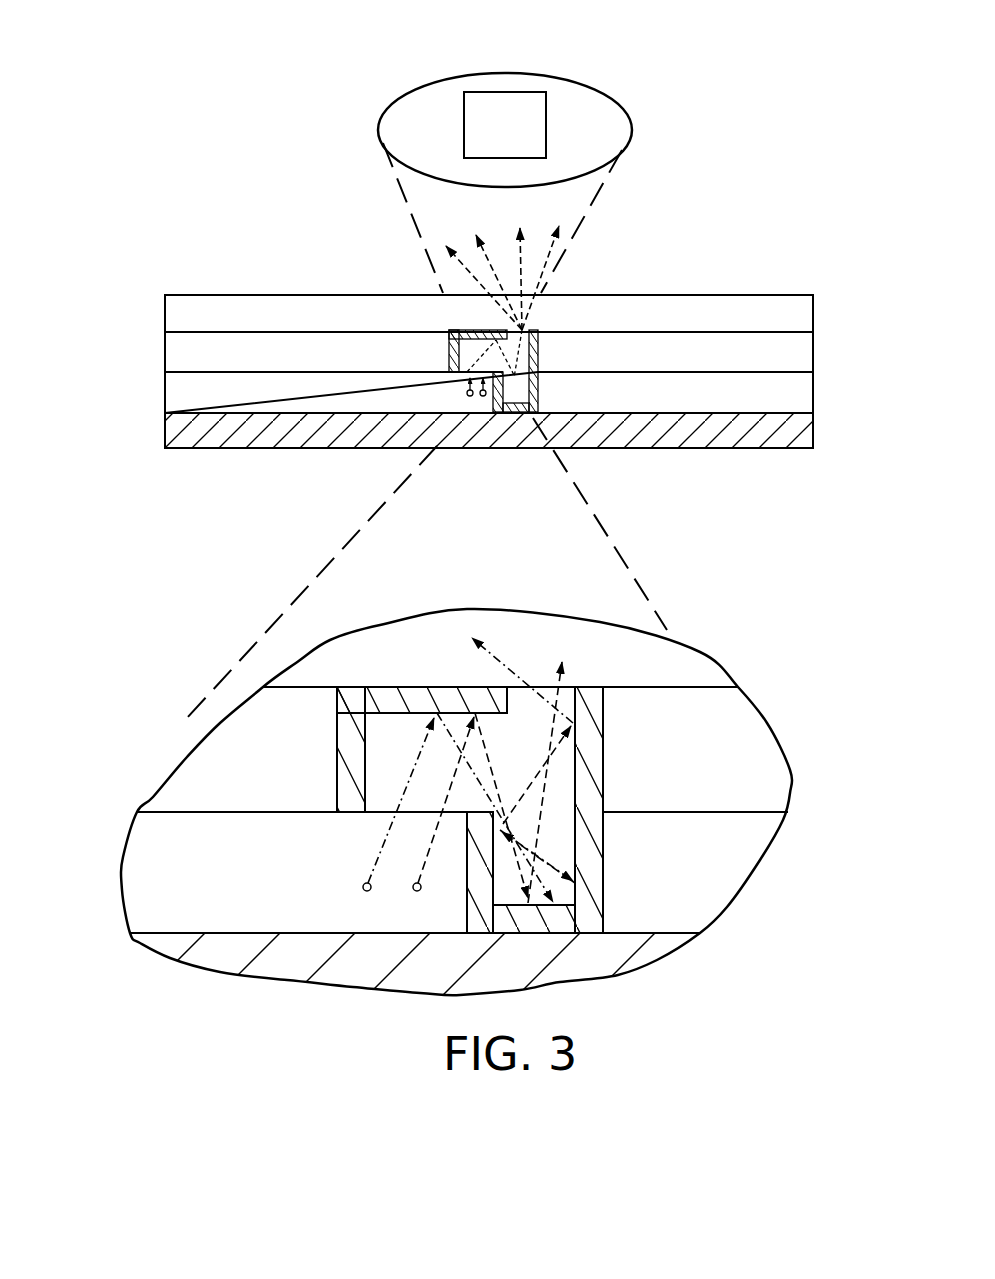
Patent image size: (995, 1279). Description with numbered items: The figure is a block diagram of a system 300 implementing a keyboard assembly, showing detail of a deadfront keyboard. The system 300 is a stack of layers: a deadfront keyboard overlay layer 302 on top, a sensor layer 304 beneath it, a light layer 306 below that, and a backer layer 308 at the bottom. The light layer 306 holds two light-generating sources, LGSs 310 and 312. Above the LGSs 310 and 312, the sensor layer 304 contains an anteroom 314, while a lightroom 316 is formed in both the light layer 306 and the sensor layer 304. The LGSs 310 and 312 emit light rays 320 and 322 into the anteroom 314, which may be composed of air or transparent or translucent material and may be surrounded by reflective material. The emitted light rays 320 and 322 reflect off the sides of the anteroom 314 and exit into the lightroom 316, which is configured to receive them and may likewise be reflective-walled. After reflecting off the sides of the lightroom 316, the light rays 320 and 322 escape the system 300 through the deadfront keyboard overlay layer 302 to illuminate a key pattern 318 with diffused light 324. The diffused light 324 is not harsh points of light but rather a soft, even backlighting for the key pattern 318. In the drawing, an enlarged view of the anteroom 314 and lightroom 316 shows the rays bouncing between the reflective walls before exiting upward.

The system 300 is at (489, 227).
The deadfront keyboard overlay layer 302 is at (165, 315).
The sensor layer 304 is at (165, 357).
The light layer 306 is at (165, 402).
The backer layer 308 is at (172, 450).
The light-generating source 310 is at (365, 892).
The light-generating source 312 is at (415, 892).
The anteroom 314 is at (400, 750).
The lightroom 316 is at (558, 785).
The key pattern 318 is at (405, 145).
The emitted light ray 320 is at (472, 632).
The emitted light ray 322 is at (562, 660).
The diffused light 324 is at (523, 277).